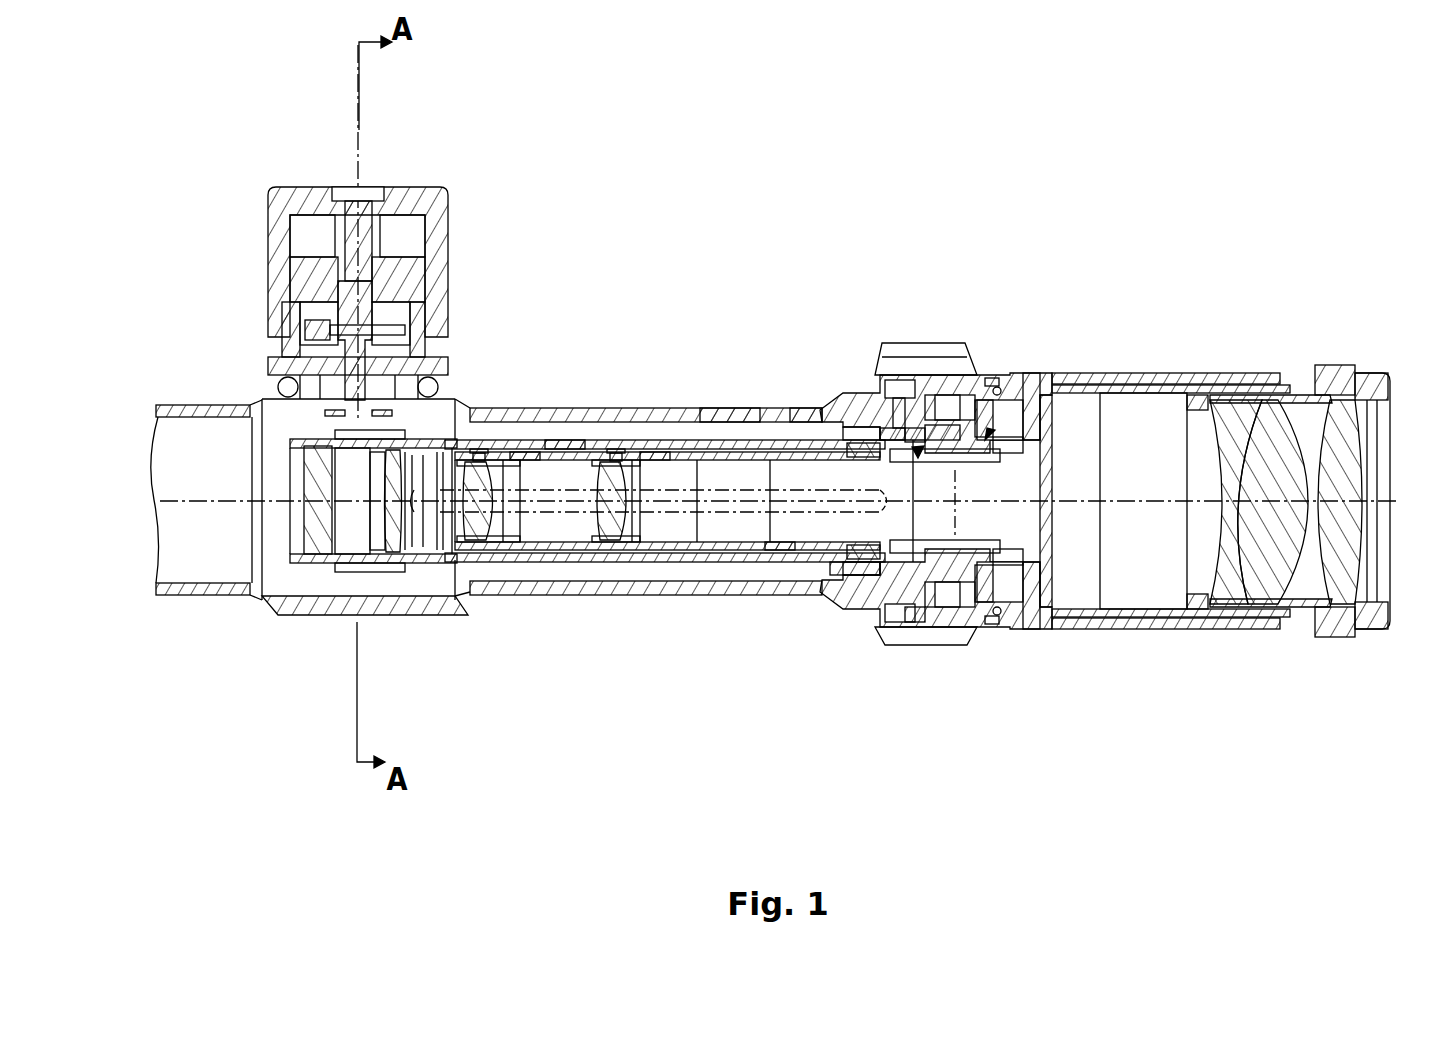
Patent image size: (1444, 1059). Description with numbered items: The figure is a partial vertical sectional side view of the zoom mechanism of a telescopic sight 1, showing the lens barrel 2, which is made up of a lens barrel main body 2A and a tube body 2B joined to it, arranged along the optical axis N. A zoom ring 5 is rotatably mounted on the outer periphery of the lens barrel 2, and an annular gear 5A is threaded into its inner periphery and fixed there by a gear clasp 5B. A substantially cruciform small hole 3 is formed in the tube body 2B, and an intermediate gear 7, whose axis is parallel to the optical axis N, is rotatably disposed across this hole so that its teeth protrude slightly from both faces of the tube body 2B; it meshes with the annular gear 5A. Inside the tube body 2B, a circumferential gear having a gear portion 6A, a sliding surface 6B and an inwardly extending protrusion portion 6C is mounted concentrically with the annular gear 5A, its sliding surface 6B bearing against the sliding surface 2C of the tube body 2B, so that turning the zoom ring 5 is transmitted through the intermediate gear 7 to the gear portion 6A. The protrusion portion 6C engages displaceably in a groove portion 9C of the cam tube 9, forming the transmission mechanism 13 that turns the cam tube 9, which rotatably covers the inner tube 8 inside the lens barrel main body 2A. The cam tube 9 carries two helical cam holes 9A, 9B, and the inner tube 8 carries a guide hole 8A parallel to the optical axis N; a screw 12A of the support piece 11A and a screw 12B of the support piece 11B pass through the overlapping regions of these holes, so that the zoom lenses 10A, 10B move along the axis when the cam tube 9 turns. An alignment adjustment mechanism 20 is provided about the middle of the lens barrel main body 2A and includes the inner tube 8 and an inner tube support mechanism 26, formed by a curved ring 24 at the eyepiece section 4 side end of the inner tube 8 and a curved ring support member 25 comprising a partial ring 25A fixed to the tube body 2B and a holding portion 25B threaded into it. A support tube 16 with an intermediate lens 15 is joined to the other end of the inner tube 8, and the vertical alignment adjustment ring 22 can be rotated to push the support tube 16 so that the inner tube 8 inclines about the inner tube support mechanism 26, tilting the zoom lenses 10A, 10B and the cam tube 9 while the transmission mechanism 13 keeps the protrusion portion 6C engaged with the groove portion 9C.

The telescopic sight 1 is at (712, 611).
The lens barrel 2 is at (730, 353).
The lens barrel main body 2A is at (726, 408).
The tube body 2B is at (816, 408).
The sliding surface 2C is at (916, 434).
The small hole 3 is at (862, 420).
The eyepiece section 4 is at (1173, 384).
The zoom ring 5 is at (997, 410).
The annular gear 5A is at (930, 415).
The gear clasp 5B is at (1000, 420).
The gear portion 6A is at (952, 428).
The sliding surface 6B is at (885, 430).
The protrusion portion 6C is at (841, 630).
The intermediate gear 7 is at (895, 428).
The inner tube 8 is at (767, 431).
The guide hole 8A is at (568, 440).
The cam tube 9 is at (667, 435).
The cam hole 9A is at (523, 452).
The cam hole 9B is at (651, 452).
The groove portion 9C is at (779, 550).
The zoom lens 10A is at (495, 545).
The zoom lens 10B is at (626, 545).
The support piece 11A is at (476, 542).
The support piece 11B is at (596, 545).
The screw 12A is at (477, 449).
The screw 12B is at (618, 449).
The transmission mechanism 13 is at (1105, 609).
The intermediate lens 15 is at (312, 560).
The support tube 16 is at (346, 592).
The alignment adjustment mechanism 20 is at (317, 243).
The vertical alignment adjustment ring 22 is at (268, 226).
The curved ring 24 is at (1038, 630).
The curved ring support member 25 is at (952, 607).
The partial ring 25A is at (945, 622).
The holding portion 25B is at (1005, 602).
The inner tube support mechanism 26 is at (1087, 390).
The optical axis N is at (160, 492).